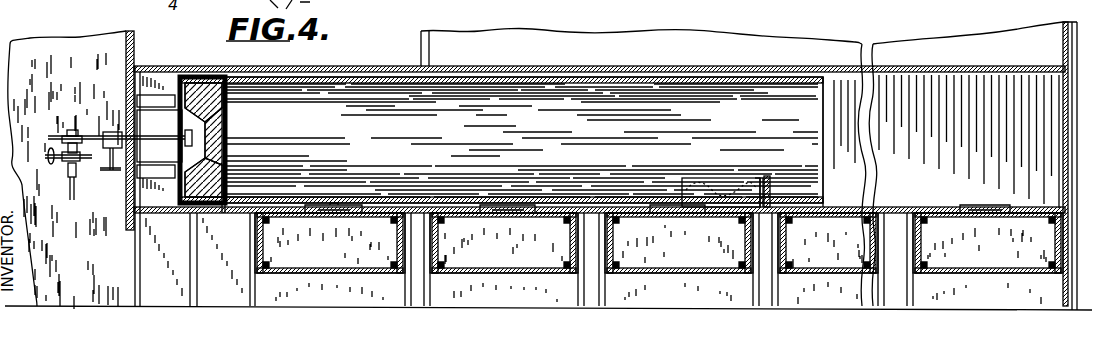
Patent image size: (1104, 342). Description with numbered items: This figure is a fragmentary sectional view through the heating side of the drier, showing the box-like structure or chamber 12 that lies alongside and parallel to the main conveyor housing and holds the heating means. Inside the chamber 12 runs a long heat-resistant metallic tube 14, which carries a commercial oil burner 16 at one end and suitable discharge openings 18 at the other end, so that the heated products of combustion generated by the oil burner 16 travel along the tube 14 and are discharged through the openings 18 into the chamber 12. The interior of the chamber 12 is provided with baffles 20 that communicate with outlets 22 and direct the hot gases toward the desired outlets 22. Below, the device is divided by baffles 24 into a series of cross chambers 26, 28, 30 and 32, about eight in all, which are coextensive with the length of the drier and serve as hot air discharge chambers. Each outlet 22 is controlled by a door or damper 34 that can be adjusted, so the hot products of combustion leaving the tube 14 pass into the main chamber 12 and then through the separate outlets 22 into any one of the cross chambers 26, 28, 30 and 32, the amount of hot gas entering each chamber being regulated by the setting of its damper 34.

The box-like structure or chamber 12 is at (848, 70).
The heat-resistant metallic tube 14 is at (650, 80).
The oil burner 16 is at (83, 120).
The discharge openings 18 is at (706, 178).
The baffles 20 is at (470, 185).
The outlets 22 is at (316, 218).
The baffles 24 is at (404, 249).
The cross chamber 26 is at (330, 243).
The cross chamber 28 is at (573, 228).
The cross chamber 30 is at (679, 243).
The cross chamber 32 is at (828, 243).
The door or damper 34 is at (343, 207).